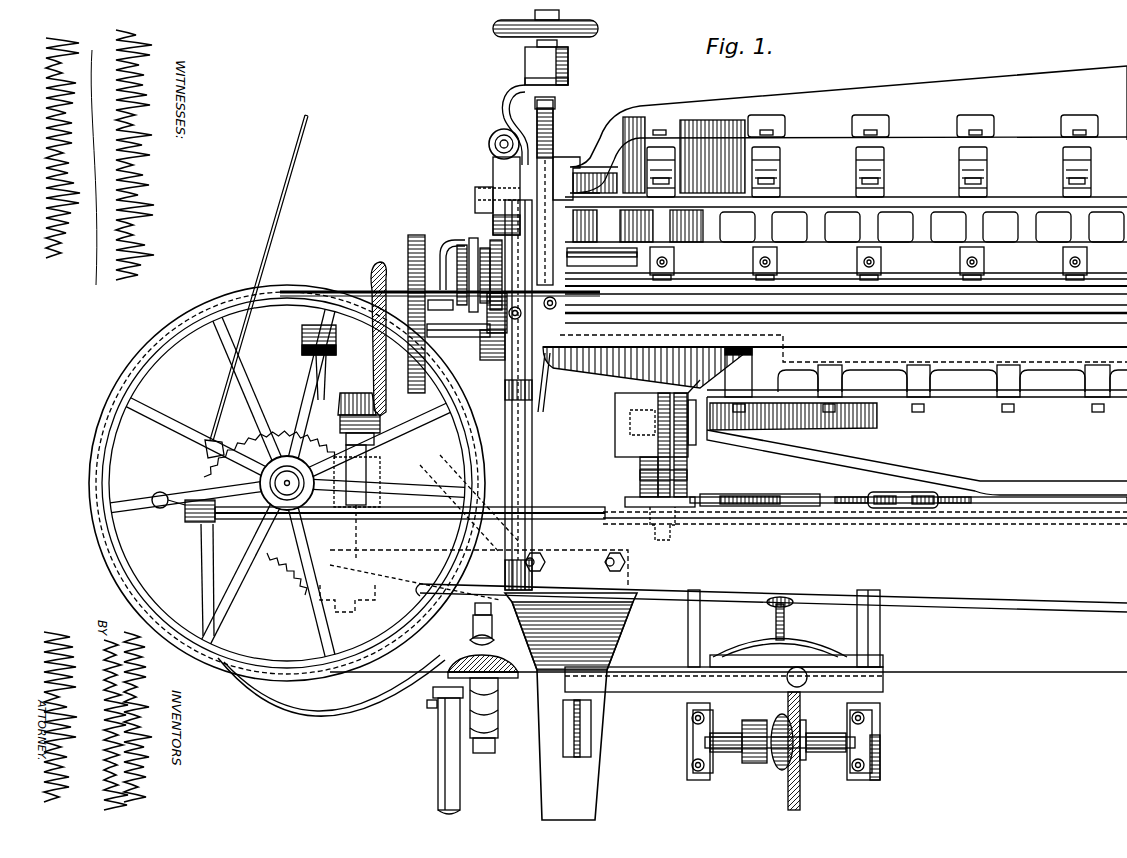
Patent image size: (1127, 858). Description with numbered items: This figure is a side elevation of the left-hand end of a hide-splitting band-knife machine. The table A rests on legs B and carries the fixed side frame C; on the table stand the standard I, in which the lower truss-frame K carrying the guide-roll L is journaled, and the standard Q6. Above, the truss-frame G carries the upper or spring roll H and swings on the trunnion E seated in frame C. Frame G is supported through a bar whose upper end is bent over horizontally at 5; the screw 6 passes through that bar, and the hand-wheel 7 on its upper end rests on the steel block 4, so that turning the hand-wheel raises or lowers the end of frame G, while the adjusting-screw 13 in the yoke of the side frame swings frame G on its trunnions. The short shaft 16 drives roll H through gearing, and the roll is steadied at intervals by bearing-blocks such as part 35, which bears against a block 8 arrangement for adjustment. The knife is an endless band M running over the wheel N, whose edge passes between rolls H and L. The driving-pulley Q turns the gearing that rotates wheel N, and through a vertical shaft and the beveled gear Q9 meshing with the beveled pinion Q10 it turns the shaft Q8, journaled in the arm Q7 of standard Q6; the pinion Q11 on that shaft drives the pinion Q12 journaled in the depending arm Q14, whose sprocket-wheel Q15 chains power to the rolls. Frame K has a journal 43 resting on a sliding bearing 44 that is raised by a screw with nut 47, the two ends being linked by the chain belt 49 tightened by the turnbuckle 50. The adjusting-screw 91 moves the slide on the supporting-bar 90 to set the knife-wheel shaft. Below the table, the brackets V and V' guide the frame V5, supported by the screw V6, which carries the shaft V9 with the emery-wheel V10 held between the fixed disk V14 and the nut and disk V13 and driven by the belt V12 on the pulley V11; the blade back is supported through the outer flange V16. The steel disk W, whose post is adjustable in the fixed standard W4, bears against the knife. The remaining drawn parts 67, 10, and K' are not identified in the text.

The knife-carrying wheel N is at (287, 483).
The driving-pulley Q is at (330, 714).
The adjusting-screw 91 is at (376, 507).
The beveled pinion Q10 is at (372, 270).
The arm Q7 is at (316, 386).
The beveled gear Q9 is at (359, 408).
The standard Q6 is at (368, 466).
The pinion Q12 is at (412, 300).
The depending arm Q14 is at (451, 254).
The sprocket-wheel Q15 is at (457, 285).
The pinion Q11 is at (445, 318).
The shaft Q8 is at (466, 348).
The side frame C is at (505, 390).
The bolt 67 is at (532, 305).
The block 8 is at (545, 192).
The screw 6 is at (555, 115).
The steel block 4 is at (568, 66).
The hand-wheel 7 is at (505, 37).
The bent-over portion of bar 5 is at (511, 125).
The adjusting-screw 13 is at (490, 138).
The trunnion E is at (482, 184).
The slide block 10 is at (565, 157).
The short shaft 16 is at (600, 248).
The truss-frame G is at (848, 131).
The spring roll H is at (1027, 262).
The bearing-block part 35 is at (675, 262).
The plate K' is at (835, 358).
The guide-roll L is at (1030, 320).
The lower truss-frame K is at (917, 446).
The standard I is at (655, 466).
The journal 43 is at (700, 380).
The bearing 44 is at (696, 445).
The nut 47 is at (688, 478).
The chain belt 49 is at (760, 494).
The turnbuckle 50 is at (908, 508).
The table A is at (728, 562).
The supporting-bar 90 is at (605, 530).
The legs B is at (571, 706).
The steel disk W is at (483, 678).
The fixed standard W4 is at (438, 750).
The band-knife M is at (728, 665).
The bracket V is at (724, 641).
The bracket V' is at (811, 628).
The screw V6 is at (769, 618).
The frame V5 is at (780, 639).
The belt V12 is at (807, 677).
The nut and disk V13 is at (658, 682).
The emery-wheel V10 is at (807, 751).
The fixed disk V14 is at (785, 720).
The outer flange V16 is at (806, 725).
The driving-pulley V11 is at (748, 763).
The shaft V9 is at (778, 770).